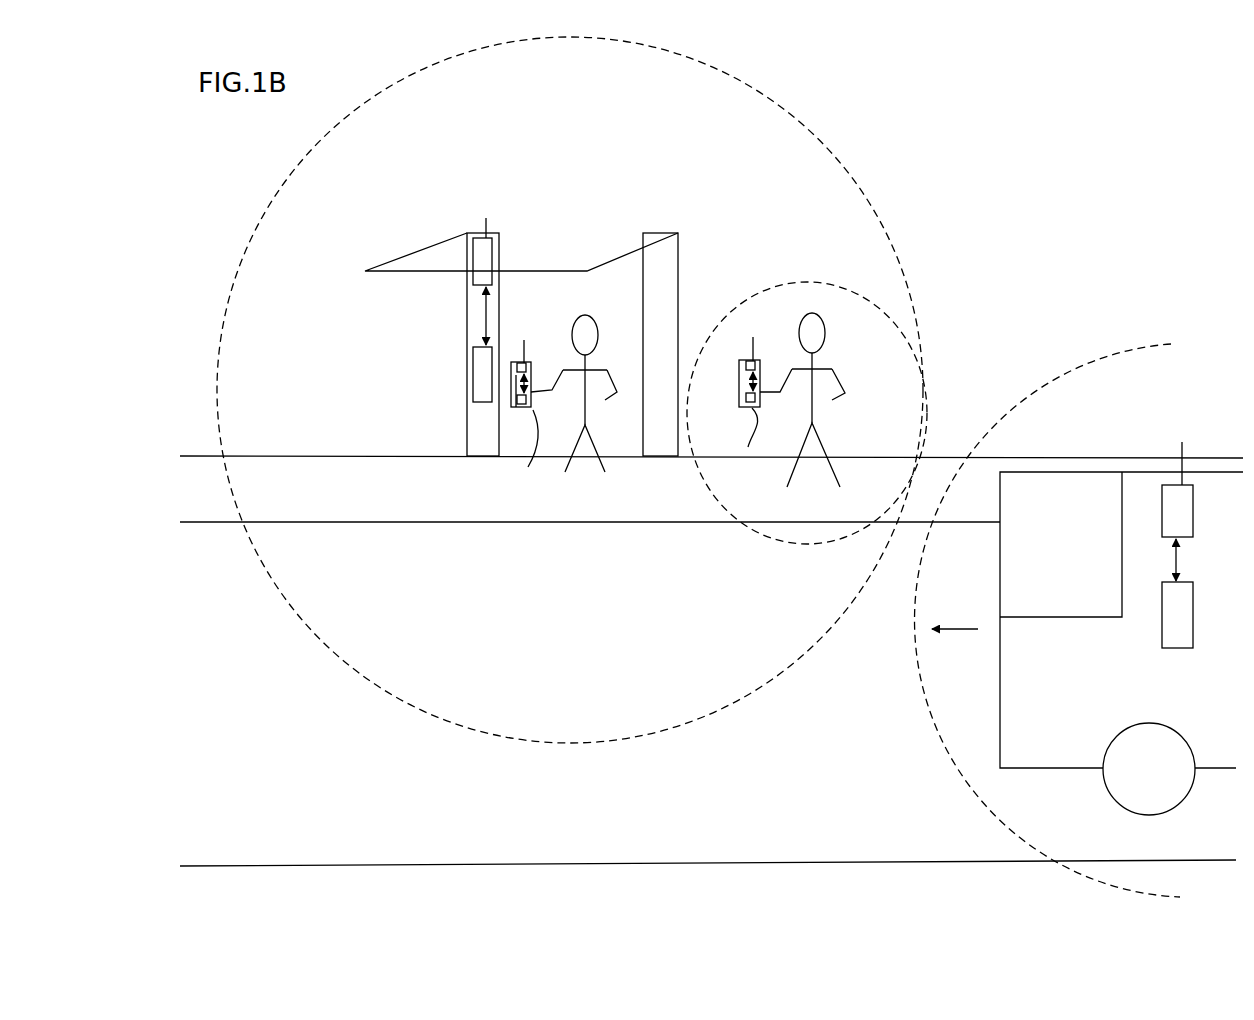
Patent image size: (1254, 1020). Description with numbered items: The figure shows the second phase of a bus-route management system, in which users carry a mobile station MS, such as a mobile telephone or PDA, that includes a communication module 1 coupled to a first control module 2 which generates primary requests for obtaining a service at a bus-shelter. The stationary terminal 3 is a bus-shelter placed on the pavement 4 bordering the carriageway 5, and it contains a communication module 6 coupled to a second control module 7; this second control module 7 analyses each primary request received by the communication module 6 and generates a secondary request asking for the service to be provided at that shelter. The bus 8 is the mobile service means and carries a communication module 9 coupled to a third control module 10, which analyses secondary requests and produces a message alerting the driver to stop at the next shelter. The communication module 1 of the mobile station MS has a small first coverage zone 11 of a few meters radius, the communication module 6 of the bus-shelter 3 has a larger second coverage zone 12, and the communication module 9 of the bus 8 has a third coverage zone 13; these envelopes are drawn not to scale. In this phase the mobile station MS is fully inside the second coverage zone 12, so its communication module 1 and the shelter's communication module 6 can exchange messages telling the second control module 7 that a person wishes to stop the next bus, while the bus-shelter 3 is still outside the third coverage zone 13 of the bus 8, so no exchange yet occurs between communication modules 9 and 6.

The communication module 1 is at (524, 363).
The first control module 2 is at (516, 408).
The stationary terminal 3 is at (676, 284).
The pavement 4 is at (386, 515).
The carriageway 5 is at (313, 755).
The communication module 6 is at (475, 252).
The second control module 7 is at (475, 383).
The bus 8 is at (1030, 768).
The communication module 9 is at (1172, 485).
The third control module 10 is at (1163, 628).
The first coverage zone 11 is at (867, 303).
The second coverage zone 12 is at (813, 130).
The third coverage zone 13 is at (1107, 357).
The mobile station MS is at (598, 399).